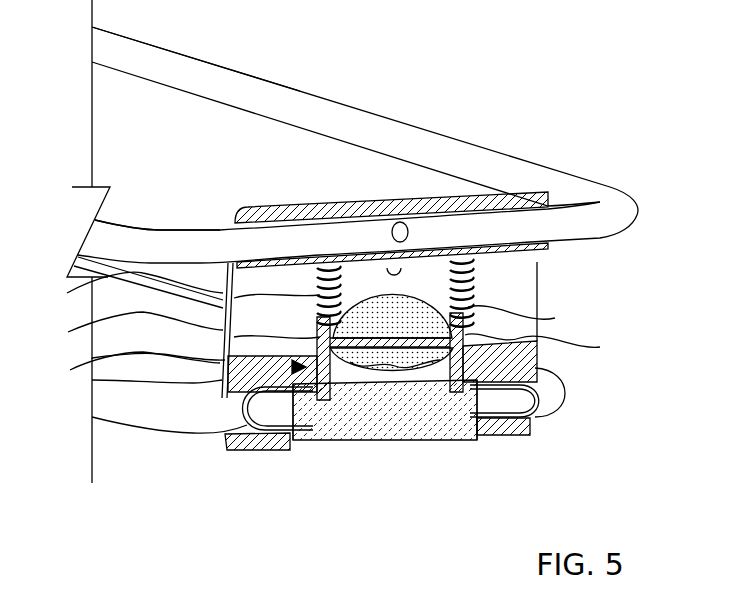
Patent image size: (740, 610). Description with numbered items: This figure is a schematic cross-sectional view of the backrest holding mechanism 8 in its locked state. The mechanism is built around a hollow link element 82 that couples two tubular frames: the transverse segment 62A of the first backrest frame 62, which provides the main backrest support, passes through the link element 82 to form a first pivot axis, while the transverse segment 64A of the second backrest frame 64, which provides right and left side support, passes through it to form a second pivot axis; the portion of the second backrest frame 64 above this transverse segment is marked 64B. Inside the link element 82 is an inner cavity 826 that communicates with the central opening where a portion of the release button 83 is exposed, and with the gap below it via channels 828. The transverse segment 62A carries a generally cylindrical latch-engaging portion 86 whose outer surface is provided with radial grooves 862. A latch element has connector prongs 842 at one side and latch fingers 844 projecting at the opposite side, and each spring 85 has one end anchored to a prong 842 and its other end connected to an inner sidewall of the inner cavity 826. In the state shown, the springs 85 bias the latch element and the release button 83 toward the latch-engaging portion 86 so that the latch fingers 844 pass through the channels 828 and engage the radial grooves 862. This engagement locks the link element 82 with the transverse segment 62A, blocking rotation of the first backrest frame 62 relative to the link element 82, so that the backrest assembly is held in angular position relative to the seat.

The backrest holding mechanism 8 is at (573, 420).
The first backrest frame 62 is at (112, 416).
The transverse segment 62A is at (222, 437).
The second backrest frame 64 is at (483, 163).
The transverse segment 64A is at (150, 235).
The upper section of tube 64B is at (193, 65).
The link element 82 is at (296, 200).
The inner cavity 826 is at (541, 256).
The channels 828 is at (124, 367).
The release button 83 is at (393, 290).
The spring 85 is at (310, 300).
The connector prongs 842 is at (330, 333).
The latch fingers 844 is at (230, 374).
The latch-engaging portion 86 is at (383, 435).
The radial grooves 862 is at (330, 442).